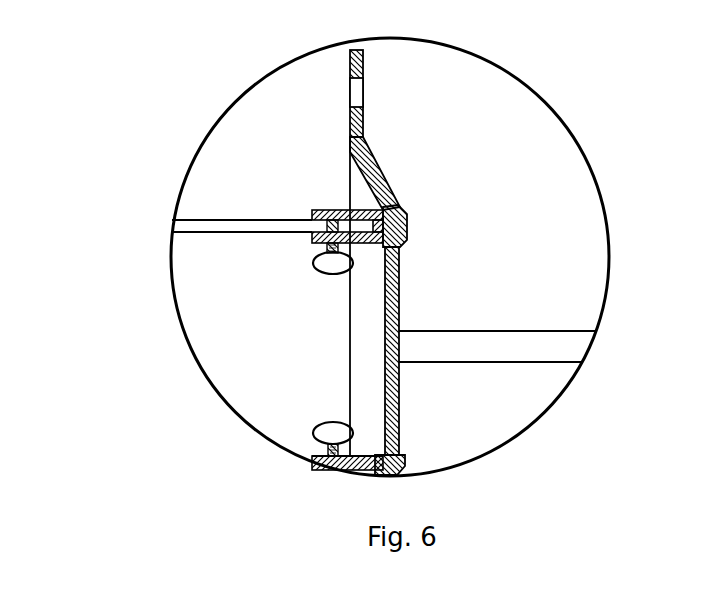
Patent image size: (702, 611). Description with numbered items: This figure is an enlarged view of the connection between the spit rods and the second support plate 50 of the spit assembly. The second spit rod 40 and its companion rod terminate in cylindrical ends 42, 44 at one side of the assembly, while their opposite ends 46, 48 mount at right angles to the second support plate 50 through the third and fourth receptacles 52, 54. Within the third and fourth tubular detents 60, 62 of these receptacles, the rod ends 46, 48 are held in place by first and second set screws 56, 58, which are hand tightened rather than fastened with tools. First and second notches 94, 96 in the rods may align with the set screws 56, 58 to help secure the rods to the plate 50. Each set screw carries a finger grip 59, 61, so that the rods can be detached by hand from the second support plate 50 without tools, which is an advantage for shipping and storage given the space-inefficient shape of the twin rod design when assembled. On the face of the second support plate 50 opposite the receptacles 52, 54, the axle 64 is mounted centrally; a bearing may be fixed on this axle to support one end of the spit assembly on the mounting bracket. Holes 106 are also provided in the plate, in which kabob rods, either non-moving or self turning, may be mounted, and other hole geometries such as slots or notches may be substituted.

The second spit rod 40 is at (185, 222).
The cylindrical end of first spit rod 42 is at (351, 140).
The cylindrical end of second spit rod 44 is at (398, 425).
The opposite end of first spit rod 46 is at (352, 285).
The opposite end of second spit rod 48 is at (378, 476).
The second support plate 50 is at (405, 400).
The third receptacle 52 is at (316, 238).
The fourth receptacle 54 is at (313, 464).
The first set screw 56 is at (328, 249).
The second set screw 58 is at (328, 450).
The finger grip 59 is at (313, 433).
The third tubular detent 60 is at (322, 211).
The finger grip 61 is at (313, 261).
The fourth tubular detent 62 is at (355, 470).
The axle 64 is at (468, 343).
The first notch 94 is at (331, 226).
The second notch 96 is at (330, 469).
The holes 106 is at (364, 82).